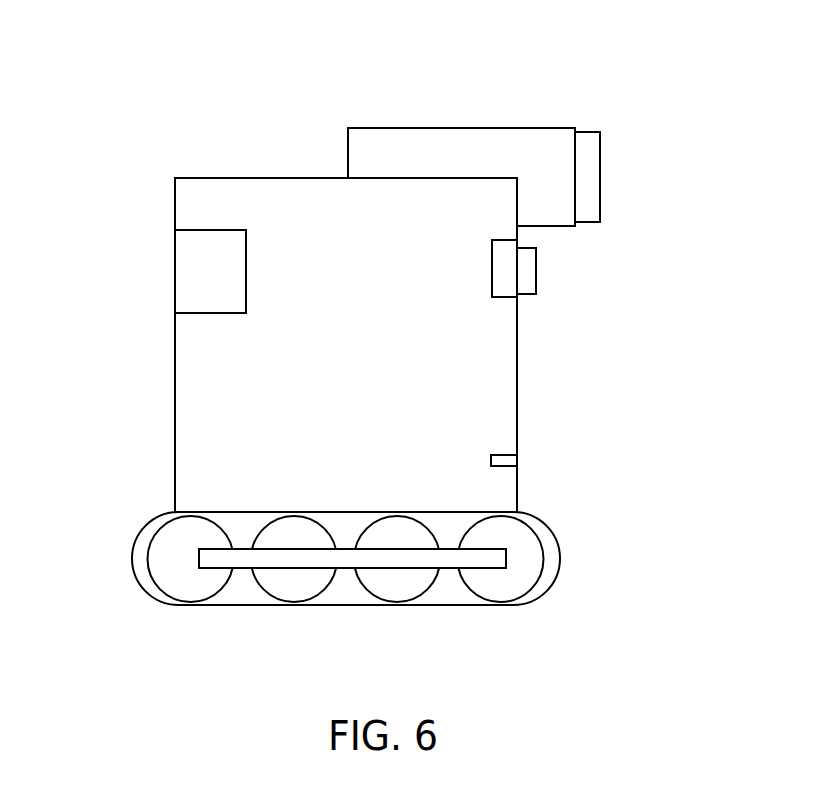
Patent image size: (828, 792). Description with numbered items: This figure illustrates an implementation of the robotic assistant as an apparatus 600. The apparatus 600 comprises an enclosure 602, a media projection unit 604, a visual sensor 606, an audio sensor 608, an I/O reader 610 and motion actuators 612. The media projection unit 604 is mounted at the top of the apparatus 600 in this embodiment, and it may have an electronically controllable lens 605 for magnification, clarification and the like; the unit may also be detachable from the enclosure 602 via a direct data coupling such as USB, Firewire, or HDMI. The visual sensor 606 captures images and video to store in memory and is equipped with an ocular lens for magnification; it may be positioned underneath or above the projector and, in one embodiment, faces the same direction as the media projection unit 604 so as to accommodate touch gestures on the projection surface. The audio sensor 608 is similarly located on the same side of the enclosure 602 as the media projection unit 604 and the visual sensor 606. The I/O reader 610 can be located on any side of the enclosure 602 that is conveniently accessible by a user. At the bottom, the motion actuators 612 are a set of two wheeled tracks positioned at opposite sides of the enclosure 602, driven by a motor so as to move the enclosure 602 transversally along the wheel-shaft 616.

The apparatus 600 is at (89, 120).
The enclosure 602 is at (175, 356).
The media projection unit 604 is at (470, 128).
The electronically controllable lens 605 is at (600, 168).
The visual sensor 606 is at (536, 277).
The audio sensor 608 is at (517, 461).
The I/O reader 610 is at (246, 272).
The motion actuators 612 is at (560, 560).
The wheel-shaft 616 is at (245, 568).